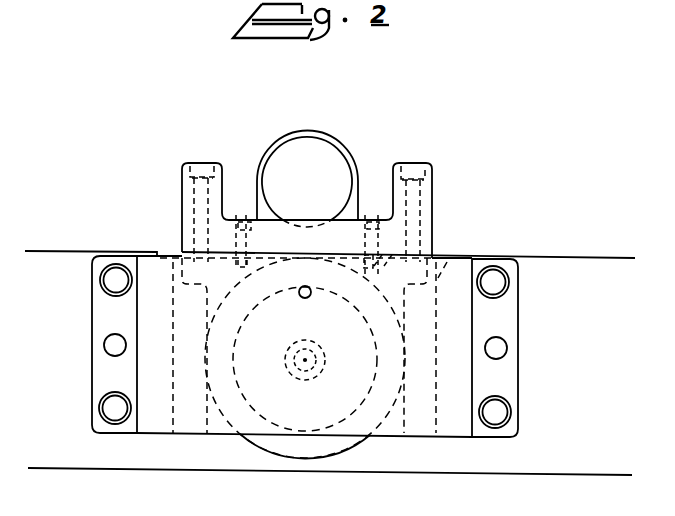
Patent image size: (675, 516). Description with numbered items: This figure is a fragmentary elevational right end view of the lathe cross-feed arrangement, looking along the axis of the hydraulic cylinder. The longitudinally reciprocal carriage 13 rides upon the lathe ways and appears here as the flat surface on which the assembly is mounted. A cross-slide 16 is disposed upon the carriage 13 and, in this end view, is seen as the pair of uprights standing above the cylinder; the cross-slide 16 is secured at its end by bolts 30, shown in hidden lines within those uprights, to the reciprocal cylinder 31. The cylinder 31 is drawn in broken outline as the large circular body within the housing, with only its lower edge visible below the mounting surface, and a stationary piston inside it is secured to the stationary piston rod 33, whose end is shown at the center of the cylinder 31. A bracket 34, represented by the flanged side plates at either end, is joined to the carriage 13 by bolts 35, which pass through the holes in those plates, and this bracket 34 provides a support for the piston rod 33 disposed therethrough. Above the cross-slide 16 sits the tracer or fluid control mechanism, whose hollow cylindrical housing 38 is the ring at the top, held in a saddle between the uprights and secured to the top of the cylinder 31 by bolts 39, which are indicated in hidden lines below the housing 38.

The carriage 13 is at (178, 247).
The cross-slide 16 is at (196, 192).
The bolts 30 is at (200, 160).
The reciprocal cylinder 31 is at (347, 438).
The stationary piston rod 33 is at (311, 366).
The bracket 34 is at (153, 309).
The bolts 35 is at (106, 283).
The hollow cylindrical housing 38 is at (346, 151).
The bolts 39 is at (247, 222).